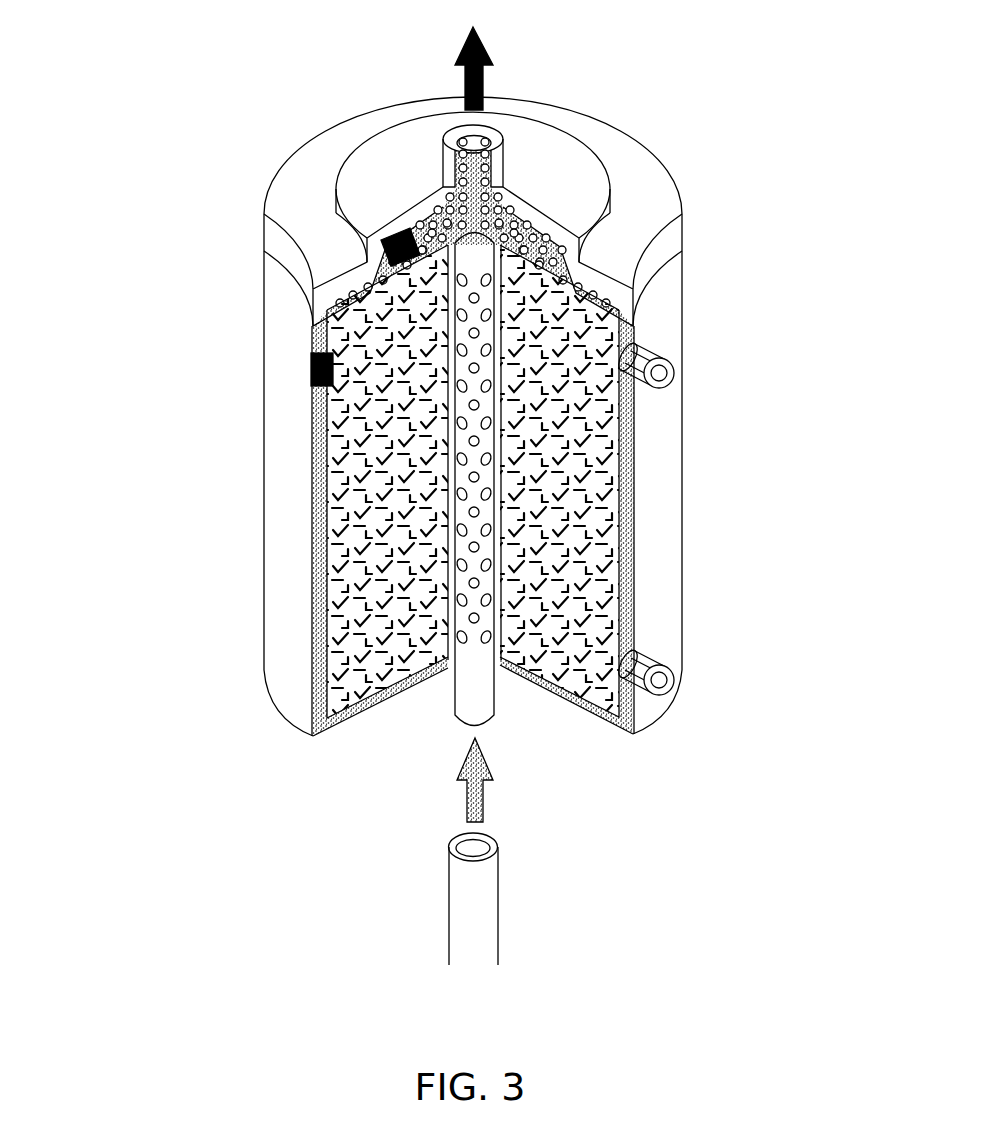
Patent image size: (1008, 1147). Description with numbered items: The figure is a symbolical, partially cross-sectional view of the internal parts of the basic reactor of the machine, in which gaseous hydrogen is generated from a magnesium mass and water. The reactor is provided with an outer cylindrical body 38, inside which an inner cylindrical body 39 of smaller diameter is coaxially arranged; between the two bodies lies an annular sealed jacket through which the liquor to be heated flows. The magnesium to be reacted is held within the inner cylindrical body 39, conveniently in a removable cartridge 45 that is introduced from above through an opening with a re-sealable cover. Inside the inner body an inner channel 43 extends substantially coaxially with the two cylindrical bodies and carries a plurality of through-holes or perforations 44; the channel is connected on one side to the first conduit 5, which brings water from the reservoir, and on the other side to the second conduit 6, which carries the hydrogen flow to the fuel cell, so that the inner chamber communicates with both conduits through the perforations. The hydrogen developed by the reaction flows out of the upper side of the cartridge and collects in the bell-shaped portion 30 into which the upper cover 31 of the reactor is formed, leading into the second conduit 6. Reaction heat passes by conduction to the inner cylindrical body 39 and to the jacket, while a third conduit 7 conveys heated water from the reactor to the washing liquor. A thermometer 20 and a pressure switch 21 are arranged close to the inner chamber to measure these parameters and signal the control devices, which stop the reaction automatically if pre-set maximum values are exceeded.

The first conduit 5 is at (450, 930).
The second conduit 6 is at (441, 141).
The third conduit 7 is at (664, 374).
The thermometer 20 is at (311, 368).
The pressure switch 21 is at (400, 235).
The bell-shaped portion 30 is at (547, 263).
The upper cover 31 is at (562, 195).
The outer cylindrical body 38 is at (274, 565).
The inner cylindrical body 39 is at (325, 507).
The inner channel 43 is at (482, 720).
The through-holes or perforations 44 is at (484, 496).
The removable cartridge 45 is at (358, 622).